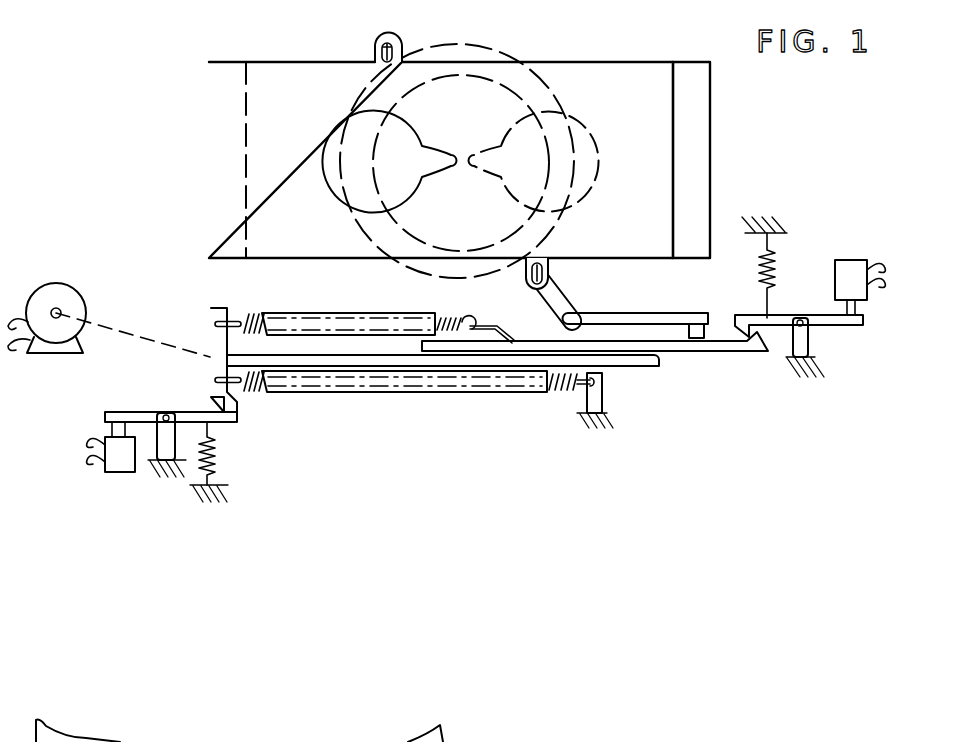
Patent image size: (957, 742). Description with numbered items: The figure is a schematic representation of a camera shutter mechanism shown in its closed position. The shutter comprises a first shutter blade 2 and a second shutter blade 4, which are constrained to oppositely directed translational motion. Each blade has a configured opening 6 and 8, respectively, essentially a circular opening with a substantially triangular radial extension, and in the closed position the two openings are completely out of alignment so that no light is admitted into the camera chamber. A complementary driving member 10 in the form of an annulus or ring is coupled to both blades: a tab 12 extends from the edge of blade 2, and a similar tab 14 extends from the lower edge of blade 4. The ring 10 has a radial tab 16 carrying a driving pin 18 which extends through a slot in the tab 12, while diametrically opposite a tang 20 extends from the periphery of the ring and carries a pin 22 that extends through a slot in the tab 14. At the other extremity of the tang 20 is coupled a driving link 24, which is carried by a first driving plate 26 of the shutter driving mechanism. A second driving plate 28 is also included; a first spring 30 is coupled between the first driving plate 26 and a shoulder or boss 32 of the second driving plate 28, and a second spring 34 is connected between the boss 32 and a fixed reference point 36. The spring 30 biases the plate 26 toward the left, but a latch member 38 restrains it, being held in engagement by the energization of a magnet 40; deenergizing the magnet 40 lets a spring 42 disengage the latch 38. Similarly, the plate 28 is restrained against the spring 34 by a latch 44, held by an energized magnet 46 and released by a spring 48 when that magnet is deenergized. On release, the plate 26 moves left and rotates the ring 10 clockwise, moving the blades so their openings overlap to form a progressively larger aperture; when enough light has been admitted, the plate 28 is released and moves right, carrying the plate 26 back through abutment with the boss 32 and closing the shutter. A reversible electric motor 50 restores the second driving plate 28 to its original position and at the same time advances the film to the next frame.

The first shutter blade 2 is at (264, 62).
The second shutter blade 4 is at (688, 64).
The configured opening 6 is at (337, 132).
The configured opening 8 is at (593, 140).
The driving member 10 is at (505, 54).
The tab 12 is at (381, 34).
The tab 14 is at (549, 274).
The radial tab 16 is at (400, 42).
The driving pin 18 is at (374, 52).
The tang 20 is at (577, 304).
The pin 22 is at (535, 272).
The driving link 24 is at (662, 313).
The first driving plate 26 is at (700, 352).
The second driving plate 28 is at (648, 366).
The first spring 30 is at (286, 313).
The shoulder or boss 32 is at (211, 320).
The second spring 34 is at (380, 393).
The fixed reference point 36 is at (602, 403).
The latch member 38 is at (782, 317).
The magnet 40 is at (850, 260).
The spring 42 is at (760, 277).
The latch 44 is at (150, 412).
The magnet 46 is at (122, 472).
The spring 48 is at (215, 462).
The reversible electric motor 50 is at (64, 283).